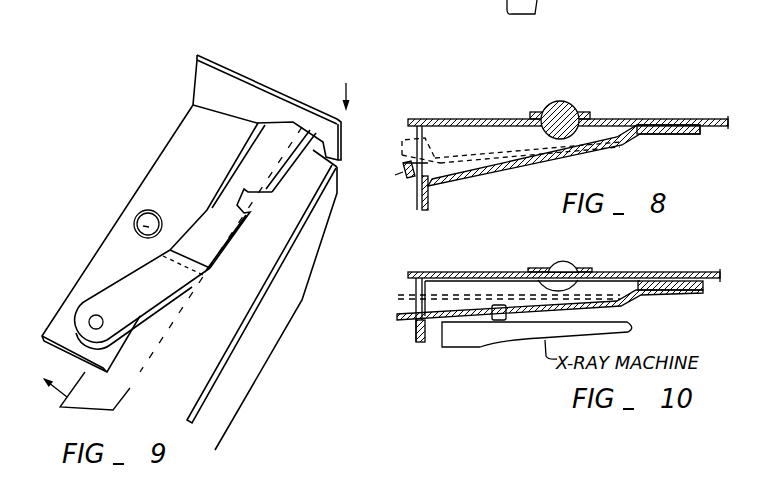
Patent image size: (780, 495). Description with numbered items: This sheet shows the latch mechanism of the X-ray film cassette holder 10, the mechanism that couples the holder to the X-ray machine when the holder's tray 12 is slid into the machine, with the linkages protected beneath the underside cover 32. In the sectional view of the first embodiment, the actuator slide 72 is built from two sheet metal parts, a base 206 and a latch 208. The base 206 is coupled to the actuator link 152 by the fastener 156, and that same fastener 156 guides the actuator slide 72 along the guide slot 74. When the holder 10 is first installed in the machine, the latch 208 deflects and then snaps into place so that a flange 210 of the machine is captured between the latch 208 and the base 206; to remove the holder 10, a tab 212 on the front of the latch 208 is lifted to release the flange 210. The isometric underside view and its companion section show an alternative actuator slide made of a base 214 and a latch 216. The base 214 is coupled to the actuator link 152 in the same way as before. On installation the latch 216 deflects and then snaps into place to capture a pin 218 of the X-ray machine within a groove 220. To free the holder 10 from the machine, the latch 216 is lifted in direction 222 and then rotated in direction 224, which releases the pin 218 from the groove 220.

In FIG. 9, the X-ray film cassette holder 10 is at (328, 93).
In FIG. 9, the tray 12 is at (262, 368).
In FIG. 9, the underside cover 32 is at (263, 294).
In FIG. 8, the underside cover 32 is at (462, 119).
In FIG. 10, the underside cover 32 is at (709, 248).
In FIG. 8, the actuator slide 72 is at (652, 141).
In FIG. 9, the guide slot 74 is at (85, 373).
In FIG. 8, the actuator link 152 is at (590, 112).
In FIG. 10, the actuator link 152 is at (590, 270).
In FIG. 9, the fastener 156 is at (185, 190).
In FIG. 8, the fastener 156 is at (568, 101).
In FIG. 10, the fastener 156 is at (560, 261).
In FIG. 8, the base 206 is at (638, 117).
In FIG. 8, the latch 208 is at (551, 161).
In FIG. 8, the flange 210 is at (428, 196).
In FIG. 8, the tab 212 is at (401, 160).
In FIG. 9, the base 214 is at (237, 38).
In FIG. 10, the base 214 is at (478, 271).
In FIG. 9, the latch 216 is at (313, 186).
In FIG. 10, the latch 216 is at (398, 314).
In FIG. 10, the pin 218 is at (488, 320).
In FIG. 9, the groove 220 is at (244, 212).
In FIG. 10, the groove 220 is at (514, 318).
In FIG. 9, the direction 222 is at (346, 83).
In FIG. 9, the direction 224 is at (301, 100).